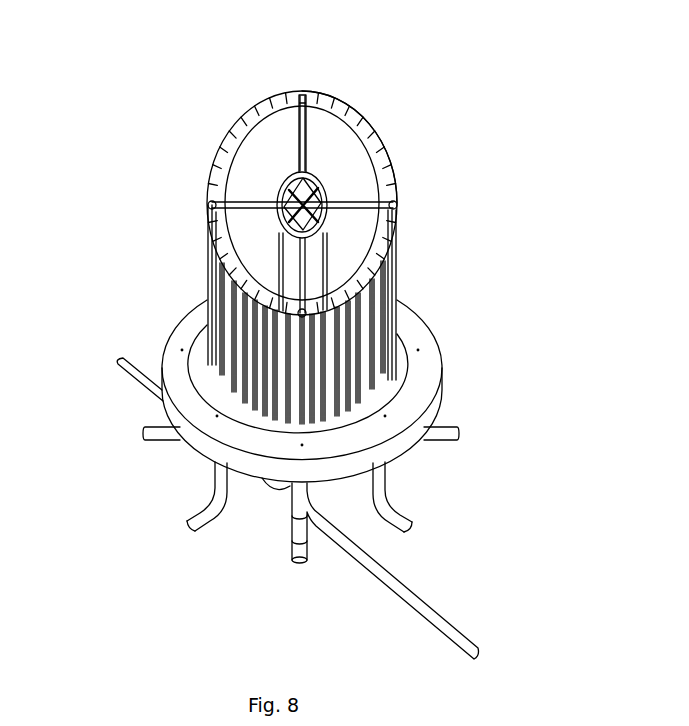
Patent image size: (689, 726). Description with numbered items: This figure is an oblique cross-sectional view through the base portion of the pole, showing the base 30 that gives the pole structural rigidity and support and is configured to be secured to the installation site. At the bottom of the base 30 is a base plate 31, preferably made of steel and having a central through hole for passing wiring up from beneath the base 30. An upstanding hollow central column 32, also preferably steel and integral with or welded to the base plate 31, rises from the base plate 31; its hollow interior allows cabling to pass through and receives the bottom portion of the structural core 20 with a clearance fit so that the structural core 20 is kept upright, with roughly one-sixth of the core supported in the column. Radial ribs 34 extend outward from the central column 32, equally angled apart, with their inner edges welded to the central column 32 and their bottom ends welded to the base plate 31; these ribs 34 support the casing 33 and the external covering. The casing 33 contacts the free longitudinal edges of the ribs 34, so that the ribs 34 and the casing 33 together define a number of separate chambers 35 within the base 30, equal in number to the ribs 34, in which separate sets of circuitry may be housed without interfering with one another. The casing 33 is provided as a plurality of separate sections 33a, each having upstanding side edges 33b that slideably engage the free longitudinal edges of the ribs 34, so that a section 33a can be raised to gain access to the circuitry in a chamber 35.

The base 30 is at (148, 120).
The base plate 31 is at (417, 381).
The central column 32 is at (290, 257).
The casing 33 is at (205, 167).
The section 33a is at (346, 107).
The upstanding side edge 33b is at (303, 96).
The radial rib 34 is at (297, 128).
The chamber 35 is at (273, 160).
The structural core 20 is at (250, 232).